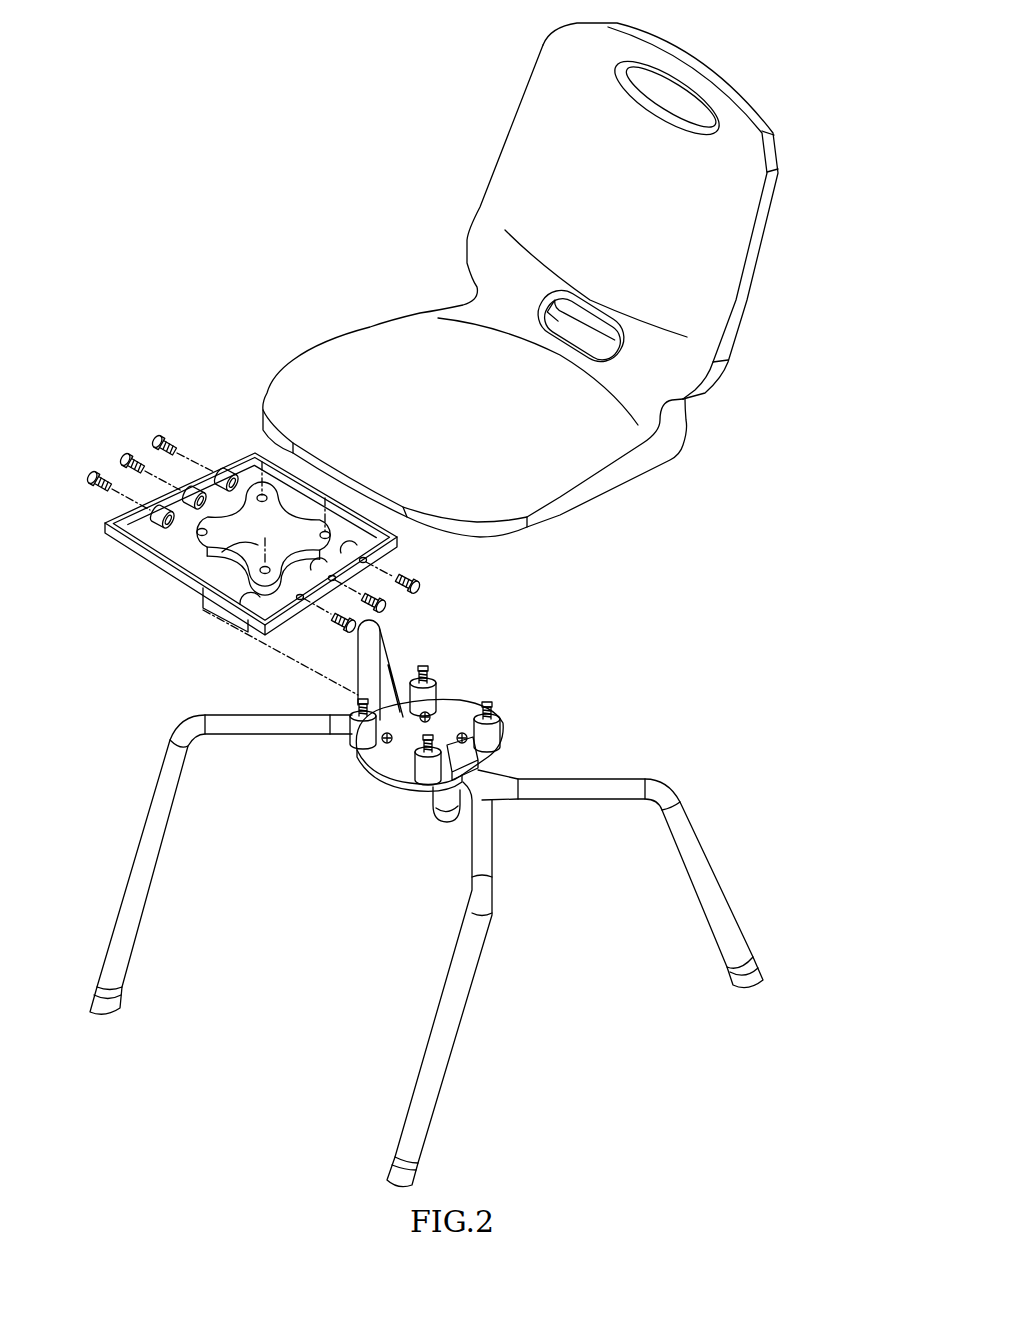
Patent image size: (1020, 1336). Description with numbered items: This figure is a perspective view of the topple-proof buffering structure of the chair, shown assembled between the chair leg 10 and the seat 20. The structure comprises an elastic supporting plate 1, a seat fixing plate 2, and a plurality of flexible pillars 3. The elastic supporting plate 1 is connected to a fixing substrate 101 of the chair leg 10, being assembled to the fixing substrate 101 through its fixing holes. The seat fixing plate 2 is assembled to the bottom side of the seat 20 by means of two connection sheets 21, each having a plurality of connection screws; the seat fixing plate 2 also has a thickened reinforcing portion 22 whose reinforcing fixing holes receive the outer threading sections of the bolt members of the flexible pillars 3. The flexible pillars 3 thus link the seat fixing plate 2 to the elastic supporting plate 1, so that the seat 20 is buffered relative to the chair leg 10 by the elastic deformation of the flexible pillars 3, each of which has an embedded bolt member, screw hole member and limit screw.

The seat 20 is at (370, 347).
The seat fixing plate 2 is at (397, 543).
The connection sheets 21 is at (140, 524).
The reinforcing portion 22 is at (213, 547).
The elastic supporting plate 1 is at (443, 728).
The flexible pillars 3 is at (370, 727).
The fixing substrate 101 is at (467, 760).
The chair leg 10 is at (460, 970).